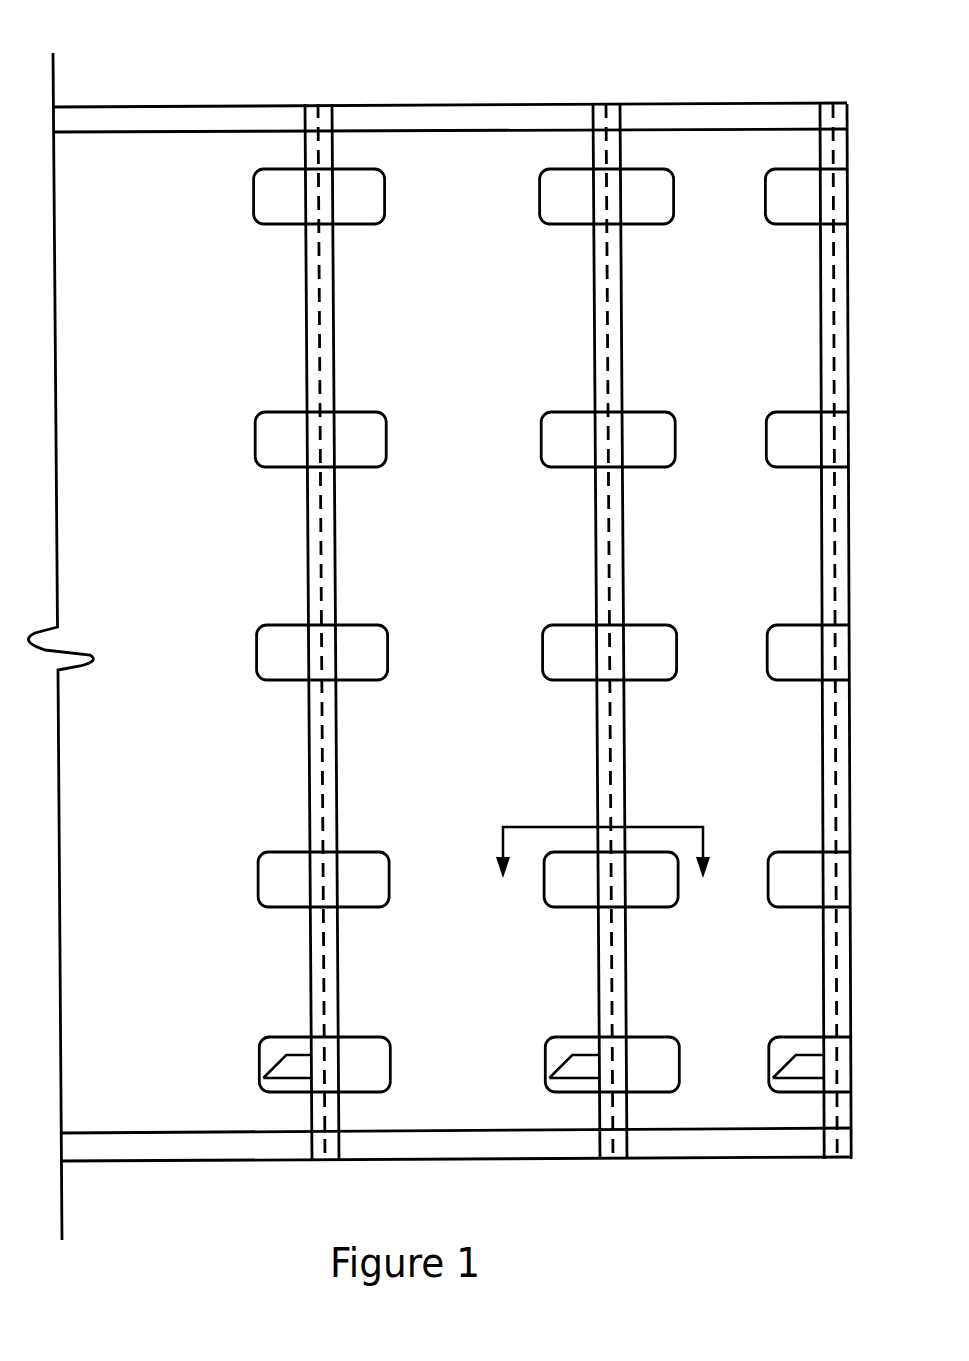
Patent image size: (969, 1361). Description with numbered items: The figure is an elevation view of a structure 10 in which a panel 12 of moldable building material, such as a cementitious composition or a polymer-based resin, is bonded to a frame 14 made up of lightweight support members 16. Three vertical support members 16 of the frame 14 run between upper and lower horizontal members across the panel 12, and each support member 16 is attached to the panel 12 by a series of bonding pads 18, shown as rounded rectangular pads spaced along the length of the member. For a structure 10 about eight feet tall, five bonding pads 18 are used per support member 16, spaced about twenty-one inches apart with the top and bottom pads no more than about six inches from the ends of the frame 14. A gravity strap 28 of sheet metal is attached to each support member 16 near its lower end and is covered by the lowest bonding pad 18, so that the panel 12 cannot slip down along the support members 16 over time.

The structure 10 is at (183, 88).
The panel 12 is at (724, 324).
The frame 14 is at (612, 113).
The support member 16 is at (295, 573).
The bonding pad 18 is at (240, 452).
The gravity strap 28 is at (285, 1042).